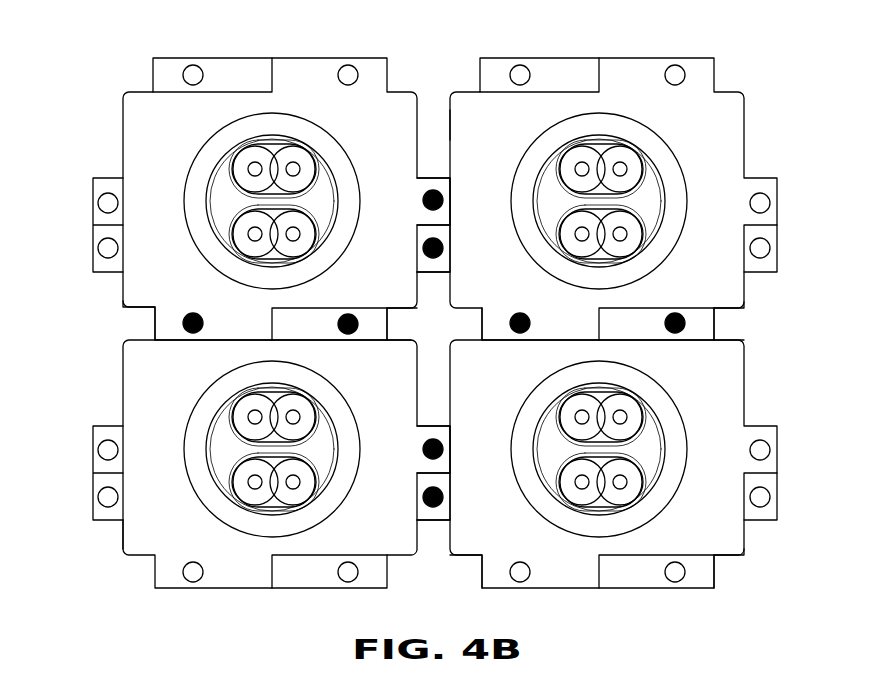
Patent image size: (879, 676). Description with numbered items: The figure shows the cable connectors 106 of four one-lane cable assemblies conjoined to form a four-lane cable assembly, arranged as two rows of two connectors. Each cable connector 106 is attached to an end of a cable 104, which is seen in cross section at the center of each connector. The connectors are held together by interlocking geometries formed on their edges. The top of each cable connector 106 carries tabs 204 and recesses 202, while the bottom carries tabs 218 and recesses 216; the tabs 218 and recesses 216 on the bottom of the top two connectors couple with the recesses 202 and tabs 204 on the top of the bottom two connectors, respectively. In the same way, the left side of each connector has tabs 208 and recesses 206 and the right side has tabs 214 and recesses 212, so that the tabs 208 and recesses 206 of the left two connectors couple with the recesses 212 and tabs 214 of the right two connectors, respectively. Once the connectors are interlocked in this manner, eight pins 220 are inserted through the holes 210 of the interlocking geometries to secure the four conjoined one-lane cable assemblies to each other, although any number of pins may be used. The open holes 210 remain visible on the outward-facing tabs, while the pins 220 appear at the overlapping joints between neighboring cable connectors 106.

The cable 104 is at (187, 170).
The cable connector 106 is at (135, 127).
The recesses 202 is at (558, 90).
The tabs 204 is at (153, 73).
The recesses 206 is at (432, 270).
The tabs 208 is at (440, 191).
The holes 210 is at (350, 63).
The recesses 212 is at (450, 125).
The tabs 214 is at (92, 278).
The recesses 216 is at (632, 311).
The tabs 218 is at (165, 327).
The pins 220 is at (193, 312).